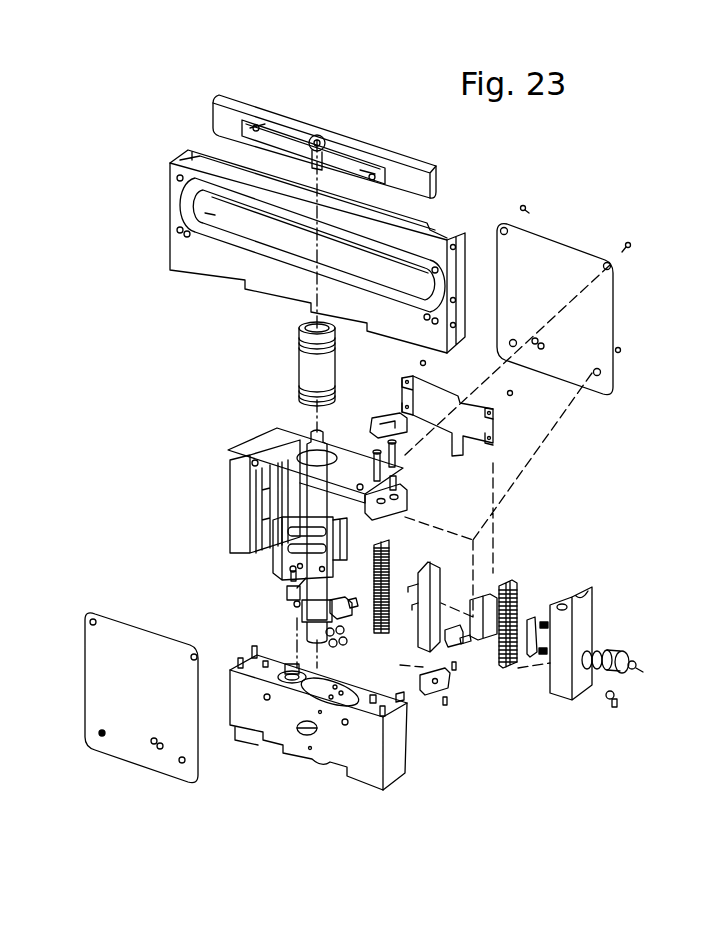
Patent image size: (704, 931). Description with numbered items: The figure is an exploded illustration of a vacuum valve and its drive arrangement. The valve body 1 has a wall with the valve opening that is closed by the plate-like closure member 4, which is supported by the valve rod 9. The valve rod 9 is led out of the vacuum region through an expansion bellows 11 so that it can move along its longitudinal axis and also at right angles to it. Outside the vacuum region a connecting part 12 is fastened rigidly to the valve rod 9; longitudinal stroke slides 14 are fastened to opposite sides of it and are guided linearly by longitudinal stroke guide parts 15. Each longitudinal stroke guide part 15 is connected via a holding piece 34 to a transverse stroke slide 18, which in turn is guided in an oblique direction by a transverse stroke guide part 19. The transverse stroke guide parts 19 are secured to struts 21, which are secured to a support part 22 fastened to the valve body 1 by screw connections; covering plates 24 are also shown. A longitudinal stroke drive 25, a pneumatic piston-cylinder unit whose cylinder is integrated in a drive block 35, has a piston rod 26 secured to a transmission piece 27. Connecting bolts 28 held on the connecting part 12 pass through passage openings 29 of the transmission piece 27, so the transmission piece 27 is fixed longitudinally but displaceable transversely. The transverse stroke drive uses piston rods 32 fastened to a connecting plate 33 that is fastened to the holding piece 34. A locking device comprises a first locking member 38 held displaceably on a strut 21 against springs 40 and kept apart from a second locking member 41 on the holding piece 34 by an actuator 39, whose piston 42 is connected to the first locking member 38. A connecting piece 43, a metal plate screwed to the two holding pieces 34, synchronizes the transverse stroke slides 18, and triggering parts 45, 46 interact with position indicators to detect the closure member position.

The valve body 1 is at (192, 257).
The closure member 4 is at (229, 115).
The valve rod 9 is at (375, 458).
The expansion bellows 11 is at (305, 360).
The connecting part 12 is at (290, 557).
The longitudinal stroke slide 14 is at (407, 522).
The longitudinal stroke guide part 15 is at (388, 552).
The transverse stroke slide 18 is at (482, 598).
The transverse stroke guide part 19 is at (517, 583).
The strut 21 is at (238, 483).
The support part 22 is at (275, 442).
The covering plate 24 is at (550, 260).
The longitudinal stroke drive 25 is at (286, 655).
The piston rod 26 is at (298, 690).
The transmission piece 27 is at (292, 595).
The connecting bolt 28 is at (292, 577).
The passage opening 29 is at (297, 605).
The piston rod 32 is at (267, 665).
The connecting plate 33 is at (437, 685).
The holding piece 34 is at (437, 570).
The drive block 35 is at (285, 720).
The first locking member 38 is at (535, 615).
The actuator 39 is at (636, 632).
The spring 40 is at (547, 623).
The second locking member 41 is at (458, 640).
The piston 42 is at (613, 670).
The connecting piece 43 is at (468, 422).
The triggering part 45 is at (350, 607).
The triggering part 46 is at (400, 697).